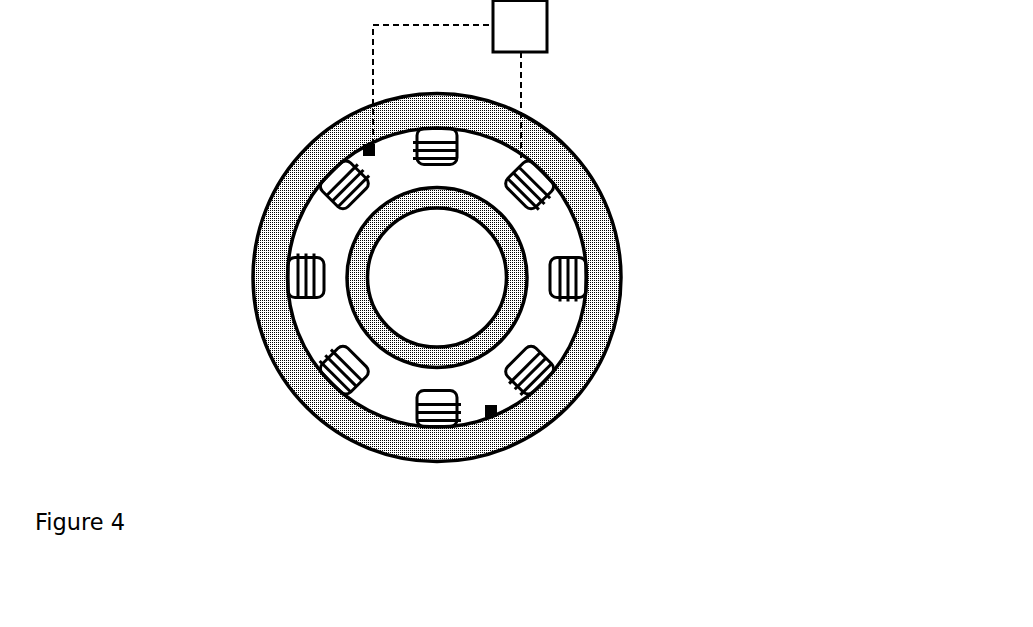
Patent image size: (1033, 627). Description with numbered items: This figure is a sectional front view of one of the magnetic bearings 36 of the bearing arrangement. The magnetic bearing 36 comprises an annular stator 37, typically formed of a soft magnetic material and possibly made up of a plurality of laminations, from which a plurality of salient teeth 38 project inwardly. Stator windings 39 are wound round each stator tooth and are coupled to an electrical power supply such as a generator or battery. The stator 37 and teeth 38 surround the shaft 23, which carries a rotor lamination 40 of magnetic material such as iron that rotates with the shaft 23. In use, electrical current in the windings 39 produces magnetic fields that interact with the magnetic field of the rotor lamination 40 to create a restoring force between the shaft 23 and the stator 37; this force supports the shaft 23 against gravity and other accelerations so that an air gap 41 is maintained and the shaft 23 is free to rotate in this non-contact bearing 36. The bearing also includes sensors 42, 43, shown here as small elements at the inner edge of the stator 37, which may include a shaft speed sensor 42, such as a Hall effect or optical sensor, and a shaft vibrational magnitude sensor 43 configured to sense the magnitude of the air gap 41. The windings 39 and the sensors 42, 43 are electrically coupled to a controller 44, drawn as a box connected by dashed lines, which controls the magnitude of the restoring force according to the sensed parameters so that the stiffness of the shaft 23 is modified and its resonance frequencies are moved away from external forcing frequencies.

The magnetic bearing 36 is at (235, 152).
The annular stator 37 is at (565, 152).
The salient teeth 38 is at (586, 282).
The stator windings 39 is at (601, 383).
The rotor lamination 40 is at (412, 355).
The air gap 41 is at (518, 218).
The shaft speed sensor 42 is at (495, 416).
The shaft vibrational magnitude sensor 43 is at (364, 146).
The controller 44 is at (547, 27).
The shaft 23 is at (413, 278).